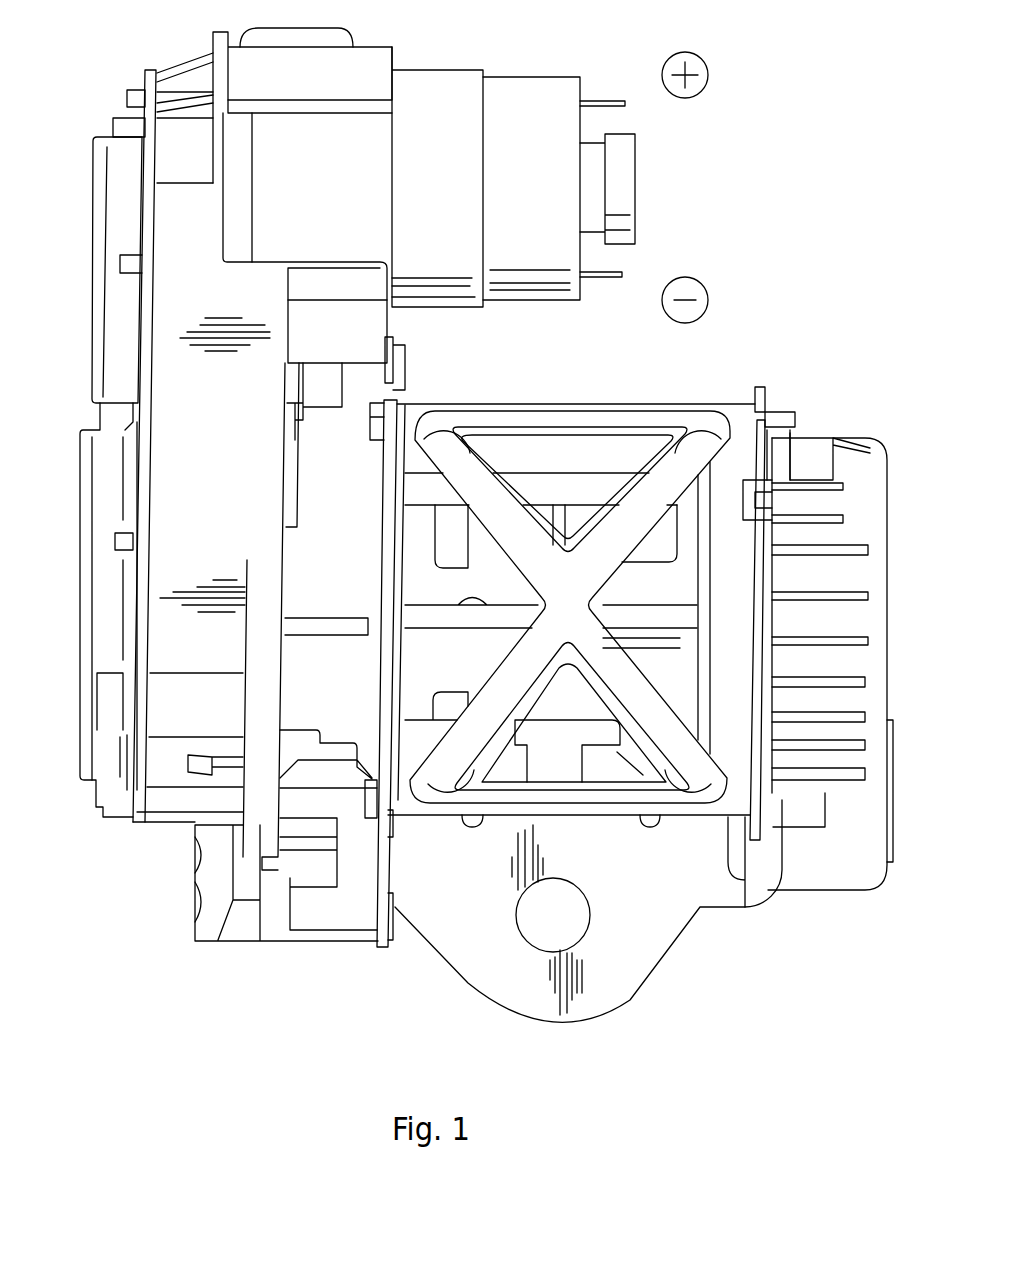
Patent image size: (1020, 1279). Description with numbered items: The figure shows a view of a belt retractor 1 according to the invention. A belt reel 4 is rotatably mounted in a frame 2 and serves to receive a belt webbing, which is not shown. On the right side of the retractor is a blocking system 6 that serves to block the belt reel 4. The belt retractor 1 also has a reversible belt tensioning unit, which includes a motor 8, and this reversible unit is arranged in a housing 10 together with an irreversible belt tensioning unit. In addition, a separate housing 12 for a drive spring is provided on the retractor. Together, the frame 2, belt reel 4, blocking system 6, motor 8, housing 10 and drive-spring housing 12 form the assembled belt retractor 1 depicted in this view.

The belt retractor 1 is at (768, 203).
The frame 2 is at (640, 952).
The belt reel 4 is at (476, 662).
The blocking system 6 is at (828, 877).
The motor 8 is at (447, 78).
The housing 10 is at (165, 817).
The housing for a drive spring 12 is at (98, 748).